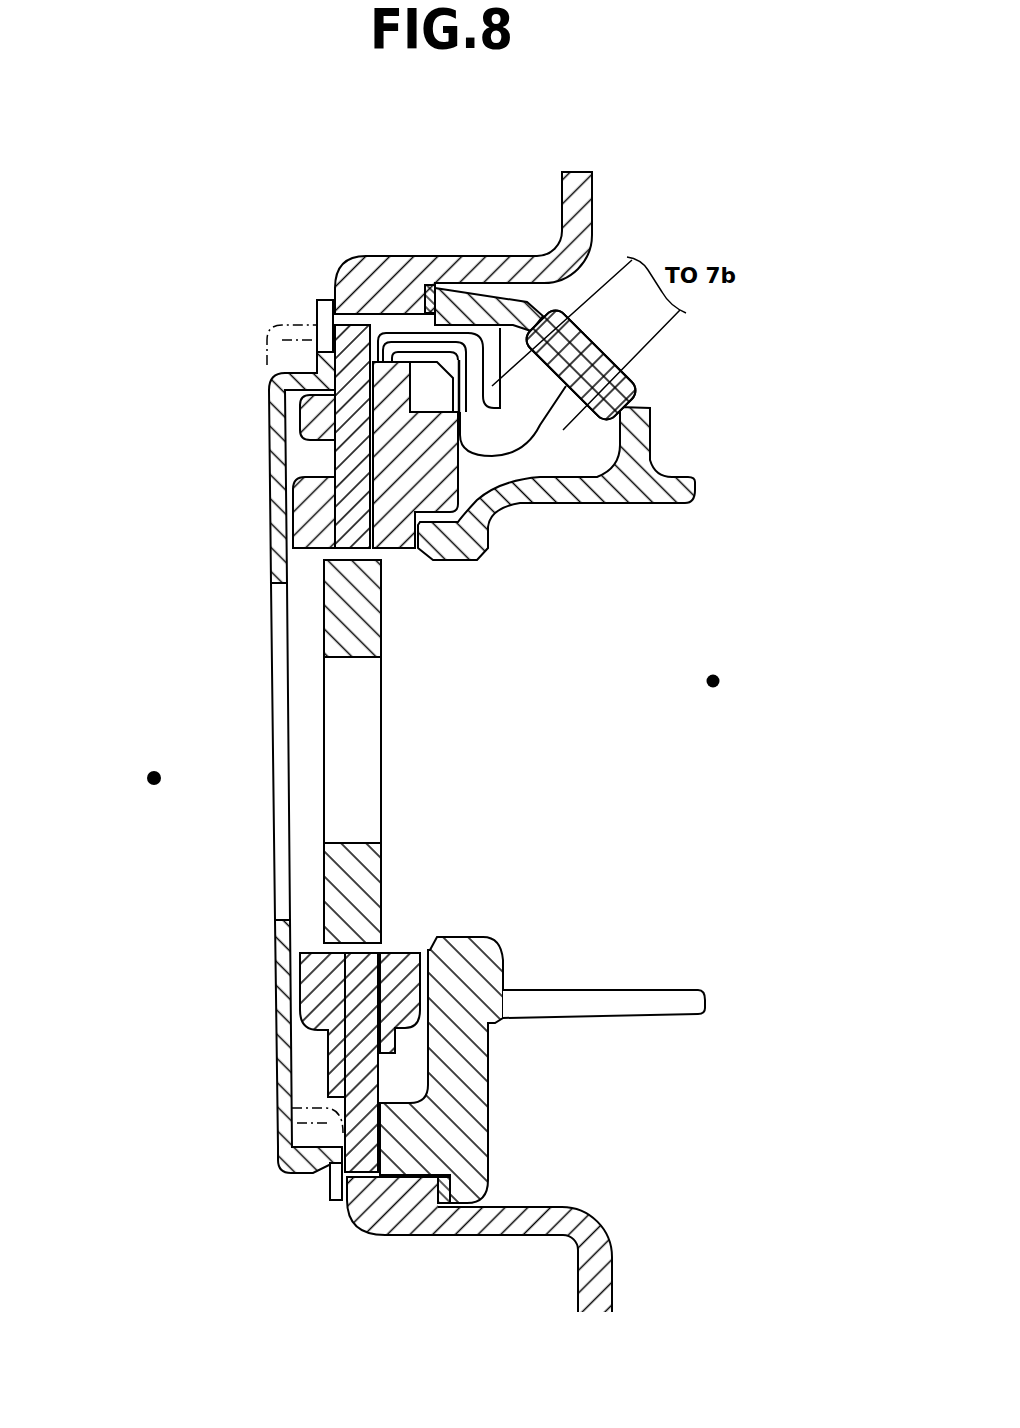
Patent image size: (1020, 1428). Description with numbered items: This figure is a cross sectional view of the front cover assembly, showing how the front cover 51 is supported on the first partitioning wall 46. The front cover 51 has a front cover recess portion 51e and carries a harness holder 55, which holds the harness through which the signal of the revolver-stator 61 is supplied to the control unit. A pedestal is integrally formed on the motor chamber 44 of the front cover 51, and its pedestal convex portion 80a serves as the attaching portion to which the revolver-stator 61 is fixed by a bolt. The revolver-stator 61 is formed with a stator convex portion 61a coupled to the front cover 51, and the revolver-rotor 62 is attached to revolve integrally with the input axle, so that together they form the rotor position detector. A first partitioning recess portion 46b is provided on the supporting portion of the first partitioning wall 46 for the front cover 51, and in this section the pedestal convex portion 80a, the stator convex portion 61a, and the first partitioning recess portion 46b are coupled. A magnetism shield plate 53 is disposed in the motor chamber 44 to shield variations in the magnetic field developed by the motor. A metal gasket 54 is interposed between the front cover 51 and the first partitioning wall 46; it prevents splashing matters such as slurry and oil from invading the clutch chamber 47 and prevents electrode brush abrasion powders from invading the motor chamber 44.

The motor chamber 44 is at (148, 778).
The first partitioning wall 46 is at (612, 1267).
The first partitioning recess portion 46b is at (390, 1180).
The clutch chamber 47 is at (719, 682).
The front cover 51 is at (472, 968).
The front cover recess portion 51e is at (567, 1018).
The magnetism shield plate 53 is at (277, 1020).
The metal gasket 54 is at (424, 306).
The harness holder 55 is at (671, 478).
The revolver-stator 61 is at (345, 452).
The stator convex portion 61a is at (320, 372).
The revolver-rotor 62 is at (352, 629).
The pedestal convex portion 80a is at (413, 1170).